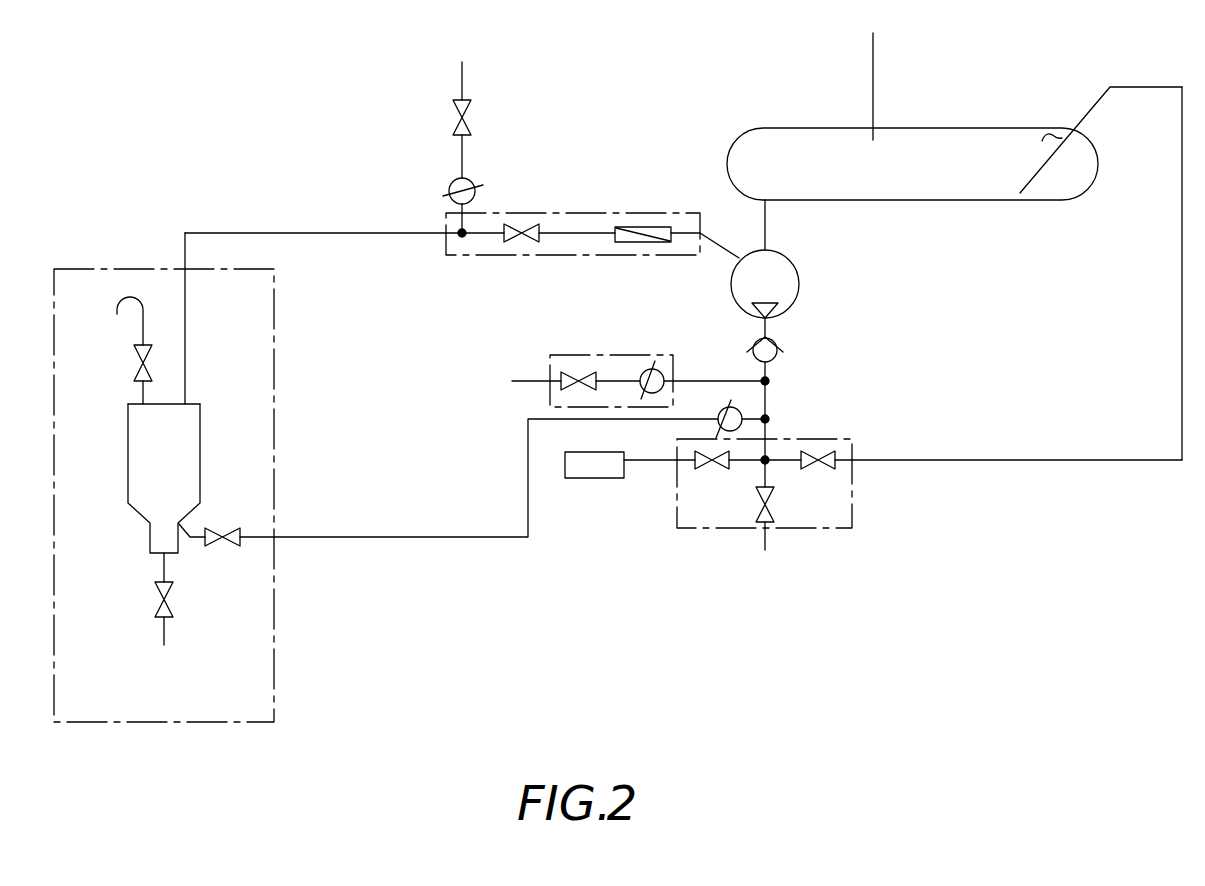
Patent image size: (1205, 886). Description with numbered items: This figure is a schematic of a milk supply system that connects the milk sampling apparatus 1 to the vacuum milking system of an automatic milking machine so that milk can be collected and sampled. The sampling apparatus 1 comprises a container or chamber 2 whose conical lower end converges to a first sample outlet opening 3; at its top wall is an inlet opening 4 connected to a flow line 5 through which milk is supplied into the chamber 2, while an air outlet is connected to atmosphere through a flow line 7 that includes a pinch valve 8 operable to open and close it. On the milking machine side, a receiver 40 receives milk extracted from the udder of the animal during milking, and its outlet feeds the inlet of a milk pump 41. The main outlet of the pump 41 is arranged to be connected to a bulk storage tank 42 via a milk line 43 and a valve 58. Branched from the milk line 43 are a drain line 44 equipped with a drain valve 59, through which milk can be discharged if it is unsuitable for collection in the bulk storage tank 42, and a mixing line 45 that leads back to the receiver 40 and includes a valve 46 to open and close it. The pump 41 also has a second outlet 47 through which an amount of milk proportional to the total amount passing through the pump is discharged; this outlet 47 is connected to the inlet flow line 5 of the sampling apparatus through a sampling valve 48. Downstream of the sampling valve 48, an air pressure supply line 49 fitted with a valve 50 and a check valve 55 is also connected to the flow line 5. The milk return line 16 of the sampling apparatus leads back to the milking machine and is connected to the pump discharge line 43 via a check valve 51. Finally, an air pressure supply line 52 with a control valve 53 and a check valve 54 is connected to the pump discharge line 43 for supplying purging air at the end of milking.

The milk sampling apparatus 1 is at (40, 295).
The container or chamber 2 is at (143, 472).
The first sample outlet opening 3 is at (150, 555).
The inlet opening 4 is at (187, 403).
The flow line 5 is at (186, 353).
The flow line 7 is at (142, 330).
The pinch valve 8 is at (140, 375).
The milk line 16 is at (250, 535).
The receiver 40 is at (773, 128).
The milk pump 41 is at (800, 278).
The bulk storage tank 42 is at (596, 480).
The milk line 43 is at (768, 400).
The drain line 44 is at (760, 540).
The mixing line 45 is at (987, 460).
The valve 46 is at (822, 456).
The second outlet 47 is at (730, 260).
The sampling valve 48 is at (535, 225).
The air pressure supply line 49 is at (460, 83).
The valve 50 is at (452, 125).
The check valve 51 is at (716, 422).
The air pressure supply line 52 is at (528, 381).
The control valve 53 is at (570, 372).
The check valve 54 is at (648, 368).
The check valve 55 is at (450, 190).
The valve 58 is at (690, 462).
The drain valve 59 is at (772, 517).